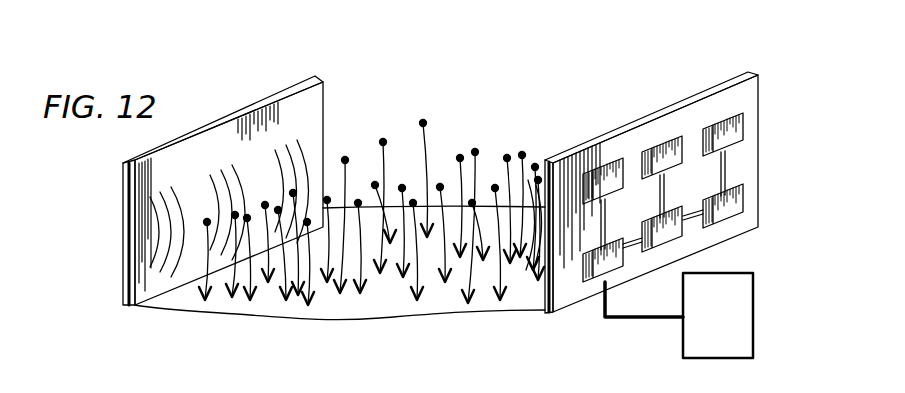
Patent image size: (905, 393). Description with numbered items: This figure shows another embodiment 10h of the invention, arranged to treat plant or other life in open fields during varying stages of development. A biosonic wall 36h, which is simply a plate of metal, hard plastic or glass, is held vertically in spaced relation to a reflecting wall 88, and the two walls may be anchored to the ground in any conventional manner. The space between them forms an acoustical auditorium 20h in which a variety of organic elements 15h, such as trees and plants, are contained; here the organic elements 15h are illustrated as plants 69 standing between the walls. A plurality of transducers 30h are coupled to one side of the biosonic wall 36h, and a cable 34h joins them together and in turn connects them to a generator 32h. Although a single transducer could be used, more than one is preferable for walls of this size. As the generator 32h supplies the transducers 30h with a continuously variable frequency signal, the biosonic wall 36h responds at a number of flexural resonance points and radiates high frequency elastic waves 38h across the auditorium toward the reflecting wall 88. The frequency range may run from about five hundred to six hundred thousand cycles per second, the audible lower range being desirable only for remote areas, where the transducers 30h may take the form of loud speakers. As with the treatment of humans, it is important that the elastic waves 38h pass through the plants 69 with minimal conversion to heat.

The reflector panel 88 is at (308, 100).
The high frequency elastic waves 38h is at (282, 160).
The acoustical auditorium 20h is at (510, 128).
The organic elements 15h is at (426, 156).
The biosonic wall 36h is at (608, 133).
The transducers 30h is at (737, 190).
The conductor 34h is at (604, 322).
The generator 32h is at (718, 357).
The plants 69 is at (365, 300).
The embodiment 10h is at (477, 326).